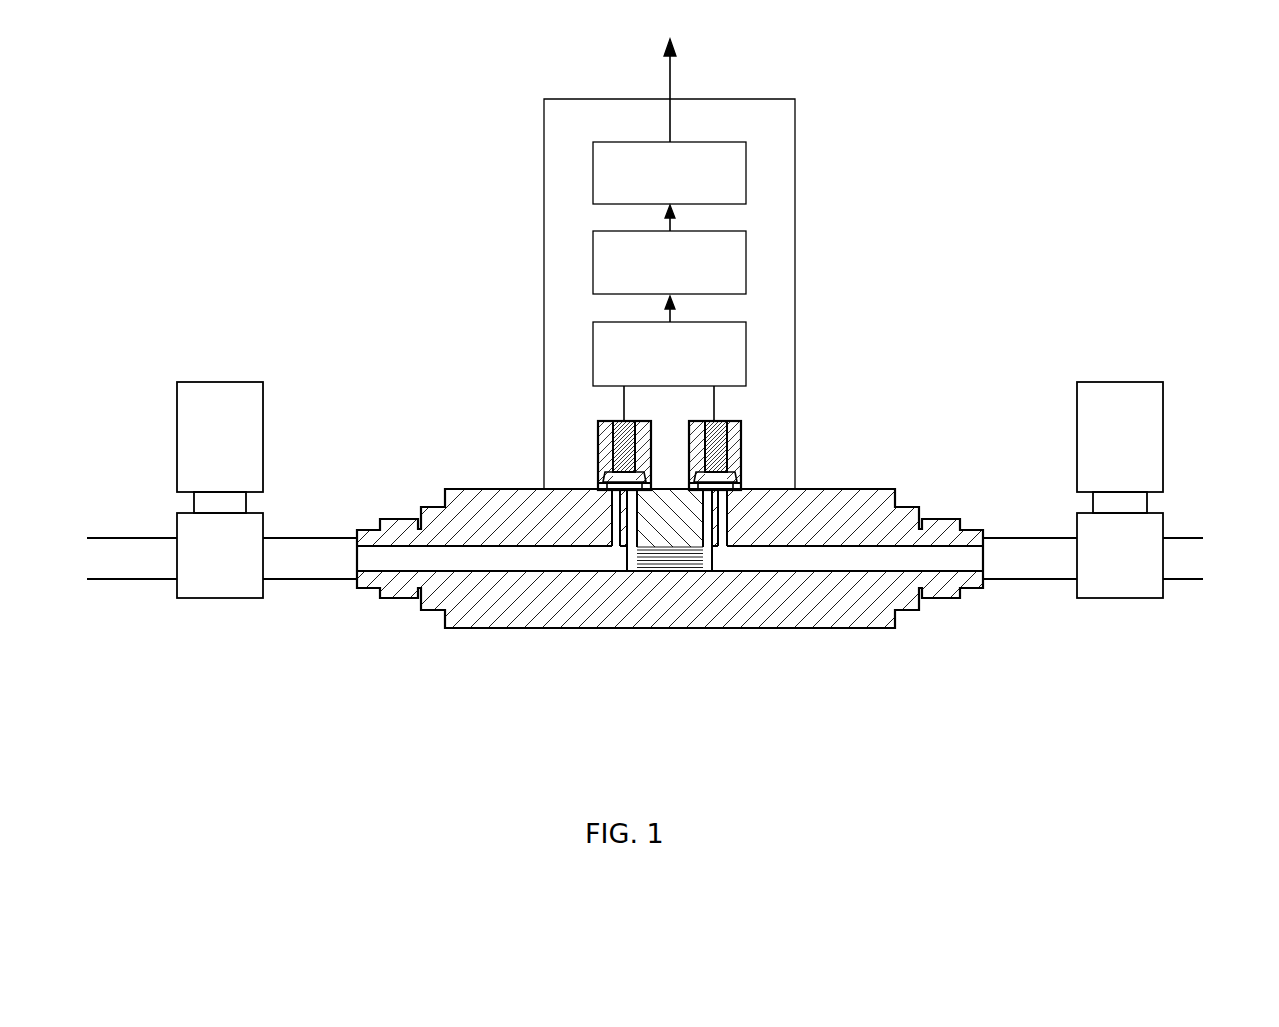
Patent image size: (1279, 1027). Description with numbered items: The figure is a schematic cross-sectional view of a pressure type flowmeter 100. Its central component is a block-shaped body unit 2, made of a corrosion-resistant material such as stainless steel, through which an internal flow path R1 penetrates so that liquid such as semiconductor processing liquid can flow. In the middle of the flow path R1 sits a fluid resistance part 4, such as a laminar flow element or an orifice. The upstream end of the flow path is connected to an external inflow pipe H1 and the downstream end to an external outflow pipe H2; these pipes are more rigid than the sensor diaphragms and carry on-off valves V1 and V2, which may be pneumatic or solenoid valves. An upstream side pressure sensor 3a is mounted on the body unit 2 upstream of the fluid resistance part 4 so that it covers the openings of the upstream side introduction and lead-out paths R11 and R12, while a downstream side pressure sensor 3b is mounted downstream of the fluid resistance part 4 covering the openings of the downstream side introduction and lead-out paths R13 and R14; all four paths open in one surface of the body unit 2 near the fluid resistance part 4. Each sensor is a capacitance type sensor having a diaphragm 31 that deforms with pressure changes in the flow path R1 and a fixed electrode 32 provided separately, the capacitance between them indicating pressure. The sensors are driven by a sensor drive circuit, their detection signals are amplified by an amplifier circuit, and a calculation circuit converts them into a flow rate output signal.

The pressure type flowmeter 100 is at (368, 104).
The body unit 2 is at (845, 629).
The upstream side pressure sensor 3a is at (484, 388).
The downstream side pressure sensor 3b is at (857, 388).
The diaphragm 31 is at (605, 476).
The fixed electrode 32 is at (600, 430).
The fluid resistance part 4 is at (670, 566).
The flow path R1 is at (458, 558).
The upstream side introduction path R11 is at (620, 503).
The upstream side lead-out path R12 is at (636, 528).
The downstream side introduction path R13 is at (713, 528).
The downstream side lead-out path R14 is at (730, 503).
The on-off valve V1 is at (220, 599).
The on-off valve V2 is at (1118, 599).
The external inflow pipe H1 is at (309, 583).
The external outflow pipe H2 is at (1028, 586).